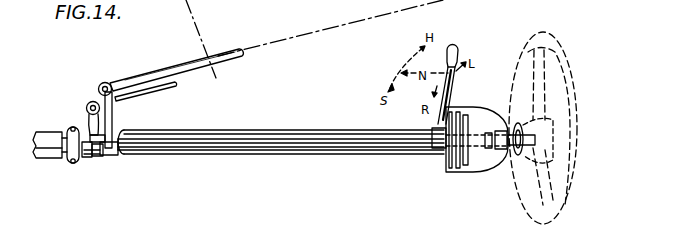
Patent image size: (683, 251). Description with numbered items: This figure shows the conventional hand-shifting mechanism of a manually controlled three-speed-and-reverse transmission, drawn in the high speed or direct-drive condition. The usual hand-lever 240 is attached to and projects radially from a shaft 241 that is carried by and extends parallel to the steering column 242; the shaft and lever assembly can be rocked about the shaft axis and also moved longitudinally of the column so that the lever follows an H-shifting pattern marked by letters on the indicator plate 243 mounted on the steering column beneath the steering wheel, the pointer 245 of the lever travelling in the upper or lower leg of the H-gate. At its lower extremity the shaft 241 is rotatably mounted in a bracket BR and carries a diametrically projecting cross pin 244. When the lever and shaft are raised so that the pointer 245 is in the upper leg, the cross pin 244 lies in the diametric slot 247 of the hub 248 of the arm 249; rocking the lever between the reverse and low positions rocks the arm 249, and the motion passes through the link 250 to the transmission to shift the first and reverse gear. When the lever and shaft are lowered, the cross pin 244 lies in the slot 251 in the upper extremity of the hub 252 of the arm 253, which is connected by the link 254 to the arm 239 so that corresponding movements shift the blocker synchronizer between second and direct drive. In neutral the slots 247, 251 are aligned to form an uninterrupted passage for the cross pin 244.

The arm 239 is at (538, 112).
The hand-lever 240 is at (453, 40).
The shaft 241 is at (338, 140).
The steering column 242 is at (294, 130).
The indicator plate 243 is at (467, 172).
The cross pin 244 is at (86, 154).
The pointer 245 is at (454, 117).
The diametric slot 247 is at (99, 153).
The hub 248 is at (113, 151).
The arm 249 is at (112, 117).
The link 250 is at (195, 63).
The slot 251 is at (87, 158).
The hub 252 is at (66, 131).
The arm 253 is at (84, 104).
The link 254 is at (163, 88).
The bracket BR is at (63, 158).